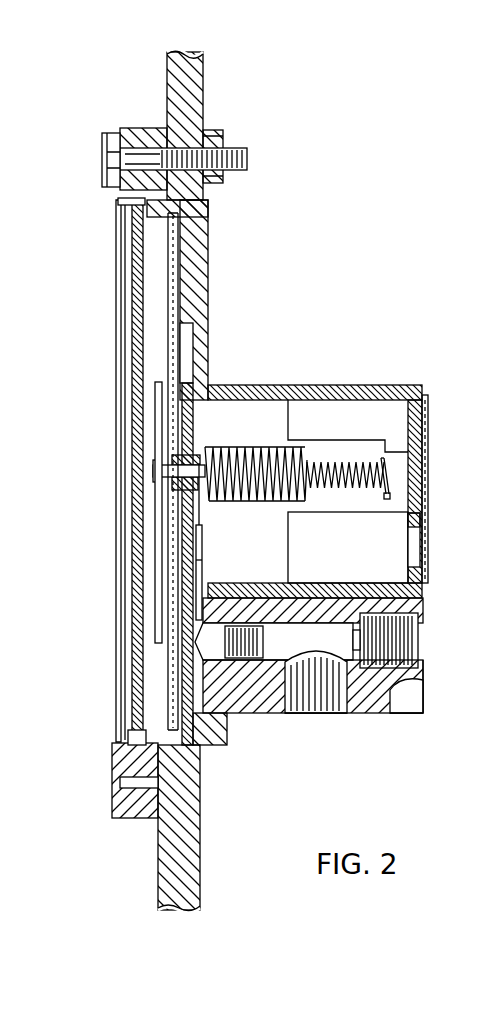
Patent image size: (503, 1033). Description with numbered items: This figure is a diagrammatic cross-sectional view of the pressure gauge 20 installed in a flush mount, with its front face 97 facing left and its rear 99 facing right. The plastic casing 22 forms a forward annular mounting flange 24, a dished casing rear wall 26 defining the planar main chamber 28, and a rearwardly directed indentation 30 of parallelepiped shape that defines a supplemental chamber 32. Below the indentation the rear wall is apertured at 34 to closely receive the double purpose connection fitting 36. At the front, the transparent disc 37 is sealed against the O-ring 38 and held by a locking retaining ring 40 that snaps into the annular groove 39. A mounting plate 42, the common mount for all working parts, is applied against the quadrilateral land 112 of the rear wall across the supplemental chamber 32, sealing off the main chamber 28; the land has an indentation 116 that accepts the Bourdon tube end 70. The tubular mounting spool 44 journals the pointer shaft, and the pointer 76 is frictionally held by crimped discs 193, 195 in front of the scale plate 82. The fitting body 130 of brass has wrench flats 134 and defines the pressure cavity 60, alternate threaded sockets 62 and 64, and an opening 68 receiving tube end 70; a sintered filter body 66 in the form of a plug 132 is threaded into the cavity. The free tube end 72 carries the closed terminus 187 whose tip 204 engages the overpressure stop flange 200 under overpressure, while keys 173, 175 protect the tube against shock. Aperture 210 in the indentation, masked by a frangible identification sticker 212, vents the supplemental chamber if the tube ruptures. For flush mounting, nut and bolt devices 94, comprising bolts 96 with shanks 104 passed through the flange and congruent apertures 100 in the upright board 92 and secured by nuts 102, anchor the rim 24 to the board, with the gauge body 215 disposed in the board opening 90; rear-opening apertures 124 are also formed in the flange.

The pressure gauge 20 is at (273, 367).
The casing 22 is at (214, 258).
The forward annular mounting flange 24 is at (168, 128).
The casing rear wall 26 is at (206, 303).
The main chamber 28 is at (161, 308).
The rearwardly directed indentation 30 is at (395, 392).
The supplemental chamber 32 is at (329, 422).
The aperture 34 is at (210, 700).
The connection fitting 36 is at (375, 714).
The transparent disc 37 is at (165, 400).
The annular sealing O-ring 38 is at (210, 207).
The annular groove 39 is at (125, 785).
The retaining ring 40 is at (115, 745).
The mounting plate 42 is at (196, 428).
The tubular mounting spool 44 is at (194, 456).
The pressure cavity 60 is at (330, 646).
The threaded connection socket 62 is at (418, 645).
The threaded connection socket 64 is at (293, 660).
The filter body 66 is at (248, 657).
The aperture 68 is at (240, 612).
The Bourdon tube end 70 is at (224, 605).
The Bourdon tube end 72 is at (390, 480).
The gauge pointer 76 is at (172, 440).
The scale plate 82 is at (163, 258).
The aperture 90 is at (170, 770).
The upright board 92 is at (190, 92).
The nut and bolt devices 94 is at (92, 138).
The bolt 96 is at (103, 160).
The front face 97 is at (110, 656).
The rear 99 is at (386, 245).
The aperture 100 is at (205, 128).
The nut 102 is at (215, 148).
The bolt shank 104 is at (247, 158).
The land 112 is at (157, 380).
The indentation 116 is at (205, 585).
The aperture 124 is at (132, 800).
The fitting body 130 is at (395, 700).
The plug 132 is at (265, 645).
The flat sides 134 is at (405, 705).
The key 173 is at (306, 413).
The key 175 is at (427, 562).
The tube closed terminus 187 is at (378, 495).
The disc 193 is at (163, 473).
The disc 195 is at (163, 485).
The overpressure stop flange 200 is at (428, 413).
The tip 204 is at (388, 500).
The aperture 210 is at (413, 552).
The gauge identification sticker 212 is at (428, 487).
The gauge body 215 is at (188, 758).